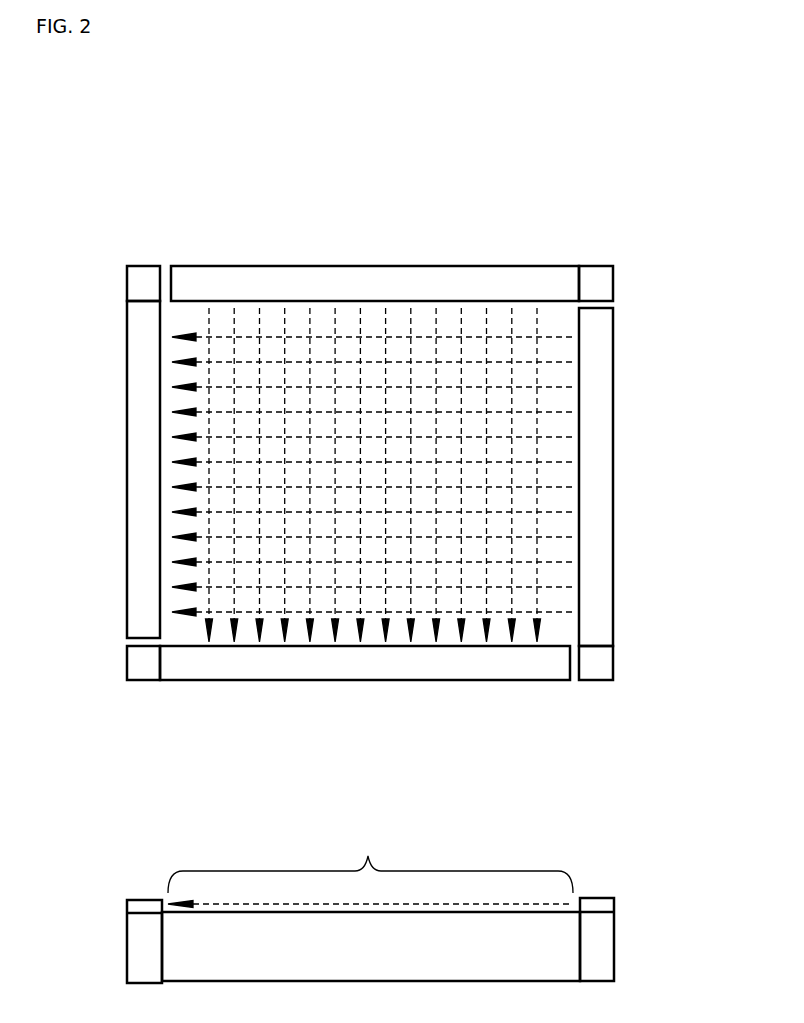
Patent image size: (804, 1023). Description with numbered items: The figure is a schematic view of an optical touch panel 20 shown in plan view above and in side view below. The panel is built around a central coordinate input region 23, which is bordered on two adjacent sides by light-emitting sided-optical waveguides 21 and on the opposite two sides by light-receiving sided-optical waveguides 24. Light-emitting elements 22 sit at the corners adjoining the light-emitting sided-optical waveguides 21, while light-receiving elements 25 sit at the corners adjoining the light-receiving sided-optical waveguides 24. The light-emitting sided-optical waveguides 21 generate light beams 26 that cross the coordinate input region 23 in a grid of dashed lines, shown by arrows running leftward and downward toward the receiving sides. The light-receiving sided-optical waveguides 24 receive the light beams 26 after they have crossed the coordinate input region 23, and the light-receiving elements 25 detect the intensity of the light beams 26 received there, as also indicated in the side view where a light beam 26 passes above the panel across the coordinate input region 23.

The optical touch panel 20 is at (590, 150).
The light-emitting sided-optical waveguide 21 is at (532, 265).
The light-emitting element 22 is at (614, 266).
The coordinate input region 23 is at (375, 470).
The light-receiving sided-optical waveguide 24 is at (127, 418).
The light-receiving element 25 is at (127, 266).
The light beam 26 is at (296, 335).